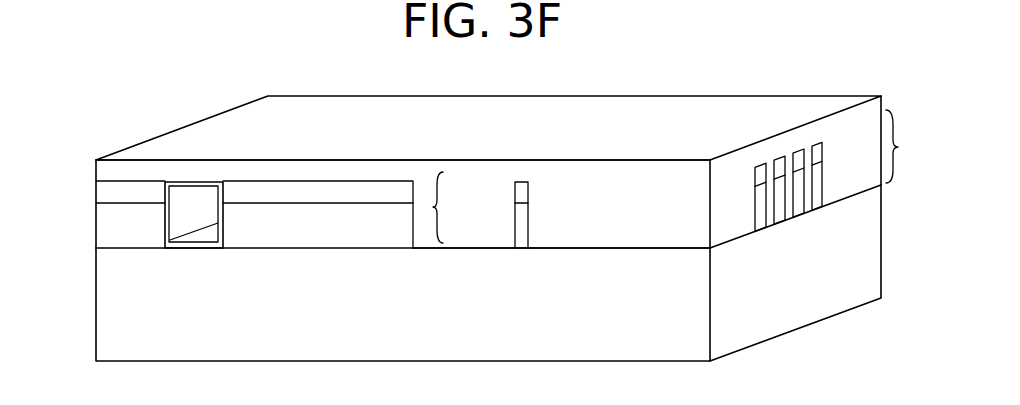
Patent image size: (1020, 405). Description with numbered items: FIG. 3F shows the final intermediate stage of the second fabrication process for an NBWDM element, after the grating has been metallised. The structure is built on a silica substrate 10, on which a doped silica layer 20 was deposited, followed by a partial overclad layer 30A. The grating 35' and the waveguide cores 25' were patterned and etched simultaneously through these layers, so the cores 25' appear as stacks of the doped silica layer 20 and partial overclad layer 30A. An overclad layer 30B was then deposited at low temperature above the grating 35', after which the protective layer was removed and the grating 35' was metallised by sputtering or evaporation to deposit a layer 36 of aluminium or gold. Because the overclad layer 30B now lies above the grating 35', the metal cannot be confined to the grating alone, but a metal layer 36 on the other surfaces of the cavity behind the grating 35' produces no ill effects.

The silica substrate 10 is at (147, 303).
The doped silica layer 20 is at (152, 227).
The waveguide cores 25' is at (665, 176).
The partial overclad layer 30A is at (247, 192).
The overclad layer 30B is at (625, 240).
The grating 35' is at (488, 103).
The metal layer 36 is at (197, 242).